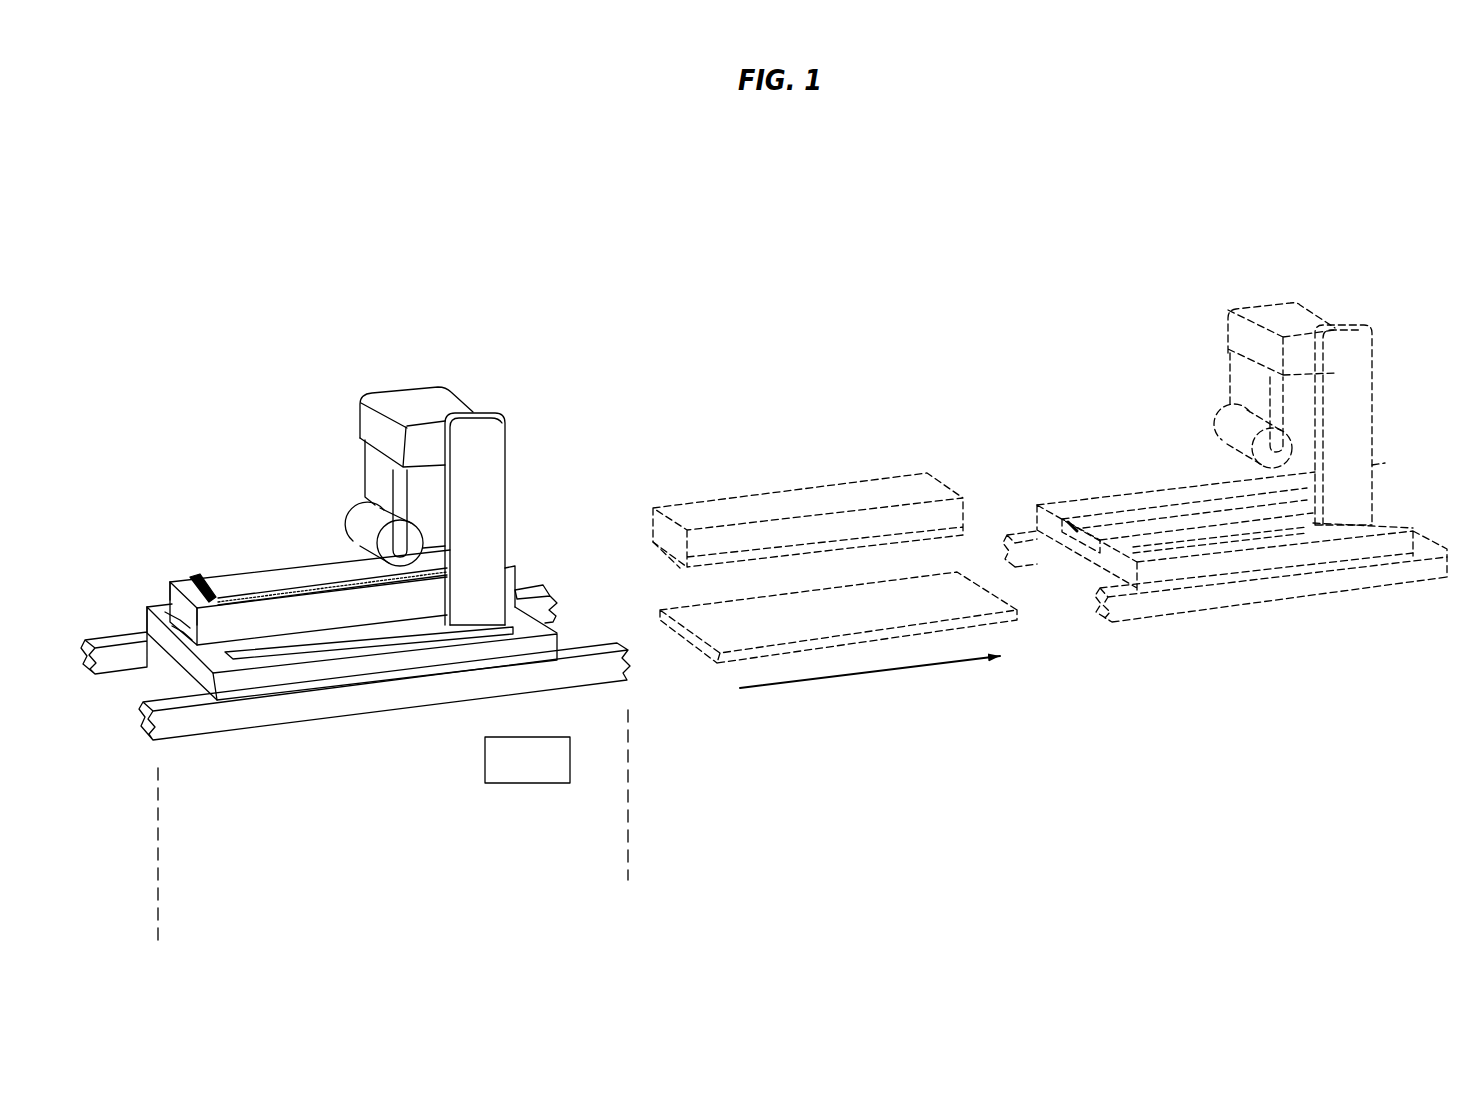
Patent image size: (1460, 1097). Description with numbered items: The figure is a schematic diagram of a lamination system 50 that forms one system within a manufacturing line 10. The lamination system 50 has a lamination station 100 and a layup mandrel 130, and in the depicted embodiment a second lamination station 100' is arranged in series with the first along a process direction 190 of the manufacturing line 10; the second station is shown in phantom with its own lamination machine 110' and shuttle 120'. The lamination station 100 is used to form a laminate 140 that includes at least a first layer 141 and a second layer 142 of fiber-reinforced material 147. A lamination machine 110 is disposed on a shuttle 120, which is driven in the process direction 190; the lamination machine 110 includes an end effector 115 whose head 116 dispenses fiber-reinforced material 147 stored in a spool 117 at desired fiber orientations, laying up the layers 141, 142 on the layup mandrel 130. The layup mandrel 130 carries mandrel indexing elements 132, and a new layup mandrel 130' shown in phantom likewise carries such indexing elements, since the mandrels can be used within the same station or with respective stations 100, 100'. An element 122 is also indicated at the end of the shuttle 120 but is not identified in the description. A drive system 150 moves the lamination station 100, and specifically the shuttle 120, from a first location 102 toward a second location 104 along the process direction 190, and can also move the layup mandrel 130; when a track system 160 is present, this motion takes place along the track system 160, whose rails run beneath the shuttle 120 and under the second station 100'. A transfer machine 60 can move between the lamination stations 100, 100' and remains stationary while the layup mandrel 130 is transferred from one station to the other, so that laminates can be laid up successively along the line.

The manufacturing line 10 is at (412, 117).
The lamination system 50 is at (398, 224).
The transfer machine 60 is at (672, 610).
The lamination station 100 is at (764, 570).
The second lamination station 100' is at (1244, 429).
The first location 102 is at (158, 902).
The second location 104 is at (630, 840).
The lamination machine 110 is at (505, 519).
The column in displaced position 110' is at (1383, 425).
The end effector 115 is at (338, 412).
The head 116 is at (366, 478).
The spool 117 is at (387, 521).
The shuttle 120 is at (327, 671).
The base in displaced position 120' is at (1242, 516).
The notch 122 is at (158, 621).
The layup mandrel 130 is at (281, 634).
The new layup mandrel 130' is at (808, 493).
The mandrel indexing elements 132 is at (165, 626).
The laminate 140 is at (227, 583).
The first layer 141 is at (170, 581).
The second layer 142 is at (202, 577).
The fiber-reinforced material 147 is at (342, 560).
The drive system 150 is at (492, 655).
The track system 160 is at (211, 720).
The process direction 190 is at (870, 685).